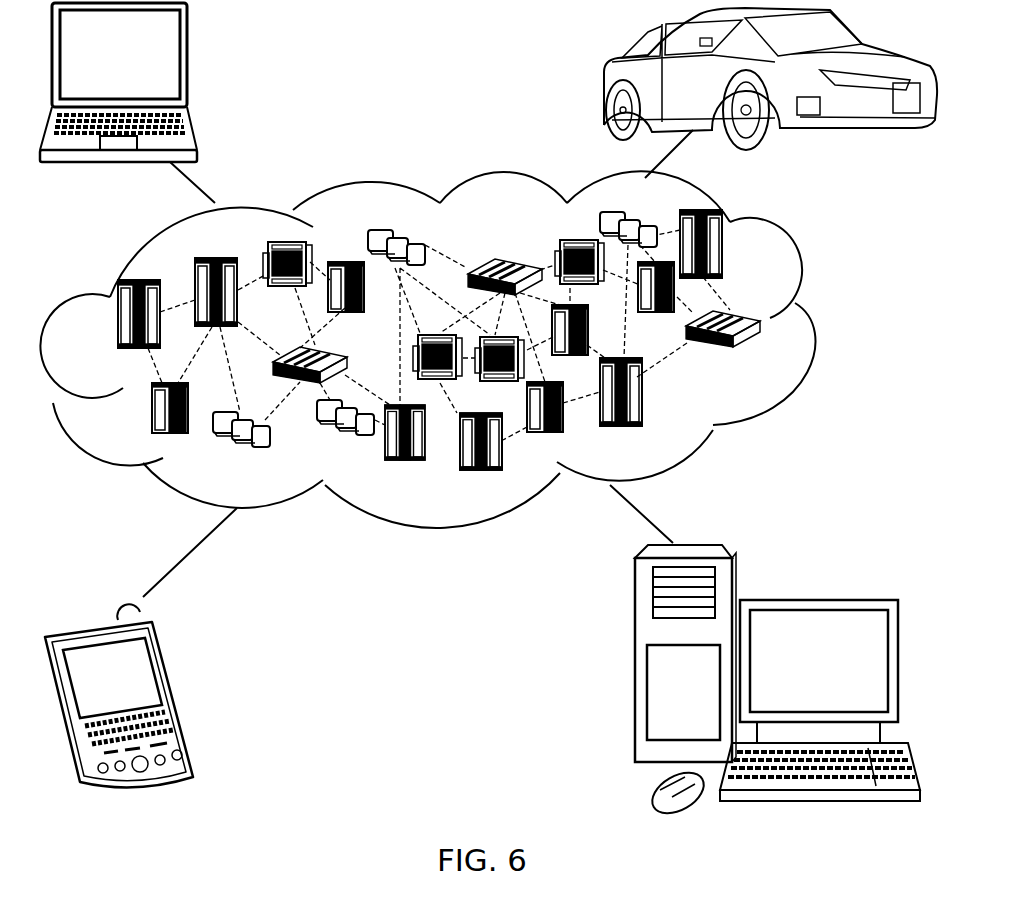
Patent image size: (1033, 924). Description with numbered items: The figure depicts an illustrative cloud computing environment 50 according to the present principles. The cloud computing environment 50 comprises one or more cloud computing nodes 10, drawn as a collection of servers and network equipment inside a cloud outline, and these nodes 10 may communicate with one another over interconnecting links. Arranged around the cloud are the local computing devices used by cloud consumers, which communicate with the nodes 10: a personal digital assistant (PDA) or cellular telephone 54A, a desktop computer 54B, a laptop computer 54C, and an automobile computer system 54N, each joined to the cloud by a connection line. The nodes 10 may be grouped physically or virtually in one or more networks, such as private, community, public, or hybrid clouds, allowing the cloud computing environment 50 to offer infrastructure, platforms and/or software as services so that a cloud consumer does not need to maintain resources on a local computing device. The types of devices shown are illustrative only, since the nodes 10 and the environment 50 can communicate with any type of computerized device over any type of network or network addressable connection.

The cloud computing environment 50 is at (458, 349).
The cloud computing node 10 is at (768, 355).
The personal digital assistant or cellular telephone 54A is at (175, 692).
The desktop computer 54B is at (815, 600).
The laptop computer 54C is at (186, 62).
The automobile computer system 54N is at (603, 78).